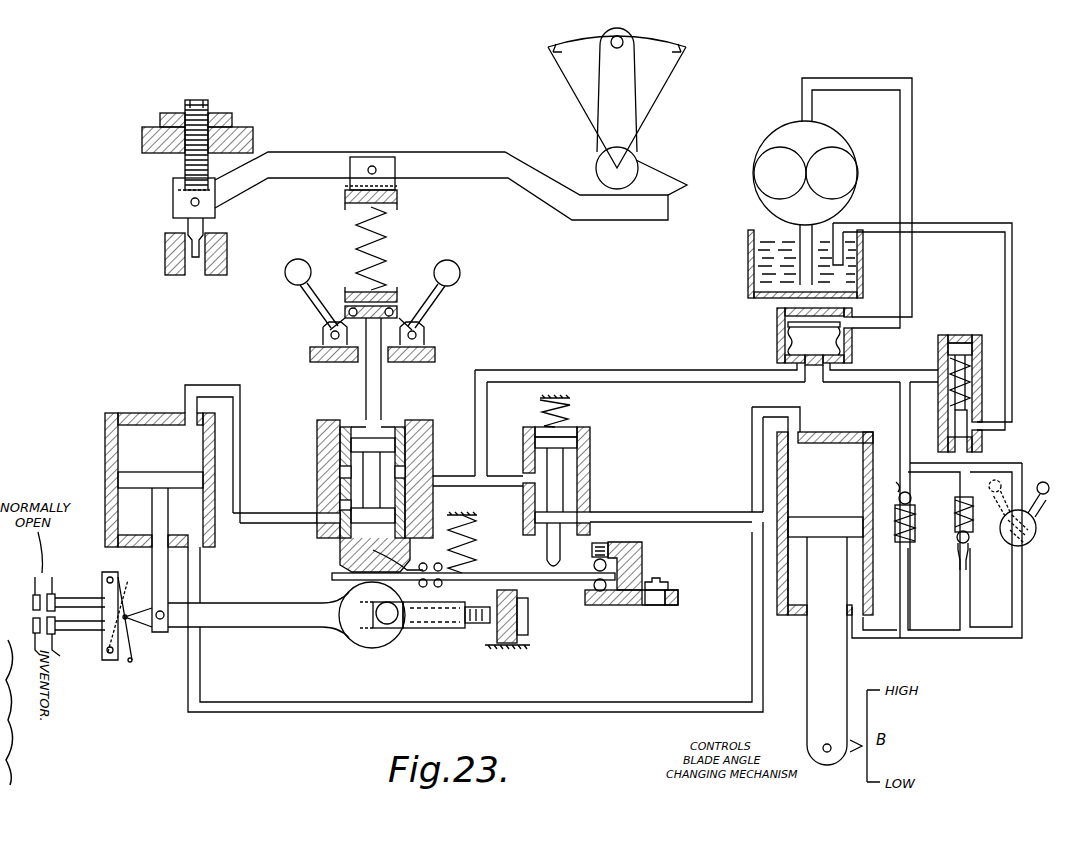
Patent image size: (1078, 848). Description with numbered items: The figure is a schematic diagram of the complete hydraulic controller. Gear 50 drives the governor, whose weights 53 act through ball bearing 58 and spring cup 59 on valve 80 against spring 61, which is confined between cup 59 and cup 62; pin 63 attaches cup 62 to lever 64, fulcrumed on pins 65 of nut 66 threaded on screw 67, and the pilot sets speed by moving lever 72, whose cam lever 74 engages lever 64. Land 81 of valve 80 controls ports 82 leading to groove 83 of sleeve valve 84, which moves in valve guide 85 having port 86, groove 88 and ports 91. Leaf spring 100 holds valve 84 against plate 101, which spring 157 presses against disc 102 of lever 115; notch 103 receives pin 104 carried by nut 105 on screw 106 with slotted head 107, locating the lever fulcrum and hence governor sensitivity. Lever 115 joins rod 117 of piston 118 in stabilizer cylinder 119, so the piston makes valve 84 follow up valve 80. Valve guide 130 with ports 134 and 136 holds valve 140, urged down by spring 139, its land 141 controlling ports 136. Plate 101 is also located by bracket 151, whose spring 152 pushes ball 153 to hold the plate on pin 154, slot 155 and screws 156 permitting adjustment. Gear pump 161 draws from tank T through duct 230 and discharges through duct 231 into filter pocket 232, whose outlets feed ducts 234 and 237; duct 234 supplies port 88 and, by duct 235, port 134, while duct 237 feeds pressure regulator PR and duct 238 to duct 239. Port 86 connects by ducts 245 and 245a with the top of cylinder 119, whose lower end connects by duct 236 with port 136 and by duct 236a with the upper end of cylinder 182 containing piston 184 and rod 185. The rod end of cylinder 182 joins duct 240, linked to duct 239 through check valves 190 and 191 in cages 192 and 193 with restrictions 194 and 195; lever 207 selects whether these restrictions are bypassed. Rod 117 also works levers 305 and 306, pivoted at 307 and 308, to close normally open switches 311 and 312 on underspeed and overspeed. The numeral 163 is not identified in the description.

The gear 50 is at (310, 354).
The weights 53 is at (298, 260).
The ball bearing 58 is at (397, 303).
The spring cup 59 is at (390, 290).
The spring 61 is at (388, 238).
The cup 62 is at (397, 197).
The pin 63 is at (375, 167).
The lever 64 is at (520, 186).
The pins 65 is at (191, 202).
The nut 66 is at (173, 186).
The screw 67 is at (185, 162).
The lever 72 is at (626, 40).
The cam lever 74 is at (670, 176).
The valve 80 is at (381, 383).
The land 81 is at (372, 522).
The ports 82 is at (344, 490).
The groove 83 is at (338, 520).
The sleeve valve 84 is at (340, 558).
The valve guide 85 is at (412, 422).
The port 86 is at (344, 503).
The groove 88 is at (423, 478).
The ports 91 is at (401, 470).
The leaf spring 100 is at (400, 566).
The plate 101 is at (540, 580).
The disc 102 is at (360, 648).
The notch 103 is at (365, 622).
The pin 104 is at (392, 628).
The nut 105 is at (438, 628).
The screw 106 is at (482, 625).
The slotted head 107 is at (525, 624).
The lever 115 is at (273, 603).
The rod 117 is at (166, 528).
The piston 118 is at (150, 472).
The cylinder 119 is at (110, 440).
The valve guide 130 is at (590, 483).
The port 134 is at (528, 475).
The port 136 is at (585, 518).
The spring 139 is at (566, 406).
The valve 140 is at (565, 457).
The land 141 is at (545, 524).
The bracket 151 is at (631, 604).
The spring 152 is at (620, 550).
The ball 153 is at (640, 565).
The pin 154 is at (600, 600).
The slot 155 is at (666, 604).
The screws 156 is at (665, 580).
The spring 157 is at (470, 538).
The gear pump 161 is at (848, 193).
The bellows relief valve 163 is at (777, 345).
The cylinder 182 is at (835, 440).
The piston 184 is at (818, 517).
The rod 185 is at (808, 718).
The check valve 190 is at (911, 499).
The check valve 191 is at (967, 543).
The cage 192 is at (915, 515).
The cage 193 is at (973, 518).
The restricted passage 194 is at (908, 488).
The restricted passage 195 is at (960, 560).
The lever 207 is at (1030, 475).
The duct 230 is at (800, 280).
The duct 231 is at (878, 82).
The filter pocket 232 is at (777, 322).
The duct 234 is at (670, 370).
The duct 235 is at (504, 480).
The duct 236 is at (688, 512).
The duct 236a is at (792, 422).
The duct 237 is at (892, 372).
The duct 238 is at (908, 404).
The duct 239 is at (998, 466).
The duct 240 is at (860, 640).
The duct 245 is at (290, 520).
The duct 245a is at (242, 447).
The lever 305 is at (128, 580).
The lever 306 is at (130, 664).
The pivot 307 is at (106, 655).
The pivot 308 is at (107, 580).
The switch 311 is at (32, 598).
The switch 312 is at (32, 630).
The tank T is at (852, 258).
The pressure regulator PR is at (962, 340).